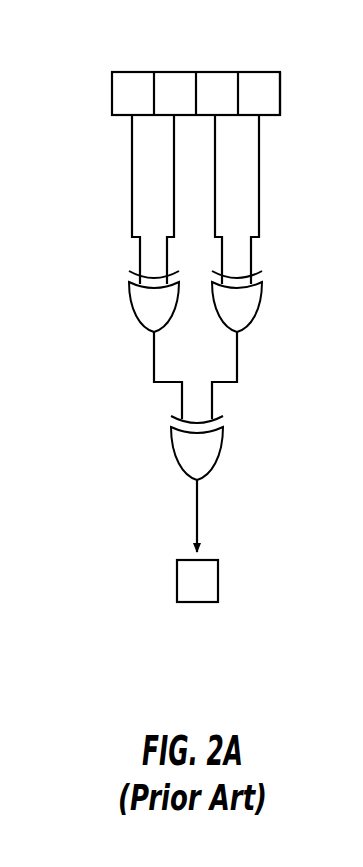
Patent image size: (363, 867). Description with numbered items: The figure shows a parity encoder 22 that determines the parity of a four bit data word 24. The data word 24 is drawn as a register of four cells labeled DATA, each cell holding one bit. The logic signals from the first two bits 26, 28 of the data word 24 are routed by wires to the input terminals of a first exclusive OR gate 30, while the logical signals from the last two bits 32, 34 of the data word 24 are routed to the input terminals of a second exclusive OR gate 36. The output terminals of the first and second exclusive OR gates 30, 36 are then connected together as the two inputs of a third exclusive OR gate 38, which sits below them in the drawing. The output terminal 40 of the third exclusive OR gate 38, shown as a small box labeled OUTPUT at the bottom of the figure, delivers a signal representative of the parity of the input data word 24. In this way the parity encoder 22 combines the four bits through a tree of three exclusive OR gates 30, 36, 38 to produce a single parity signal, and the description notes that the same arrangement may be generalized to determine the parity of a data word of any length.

The parity encoder 22 is at (150, 465).
The four bit data word 24 is at (88, 101).
The first bit 26 is at (267, 80).
The second bit 28 is at (232, 77).
The first exclusive OR gate 30 is at (262, 302).
The third bit 32 is at (163, 77).
The fourth bit 34 is at (122, 80).
The second exclusive OR gate 36 is at (130, 302).
The third exclusive OR gate 38 is at (222, 438).
The output terminal 40 is at (220, 575).